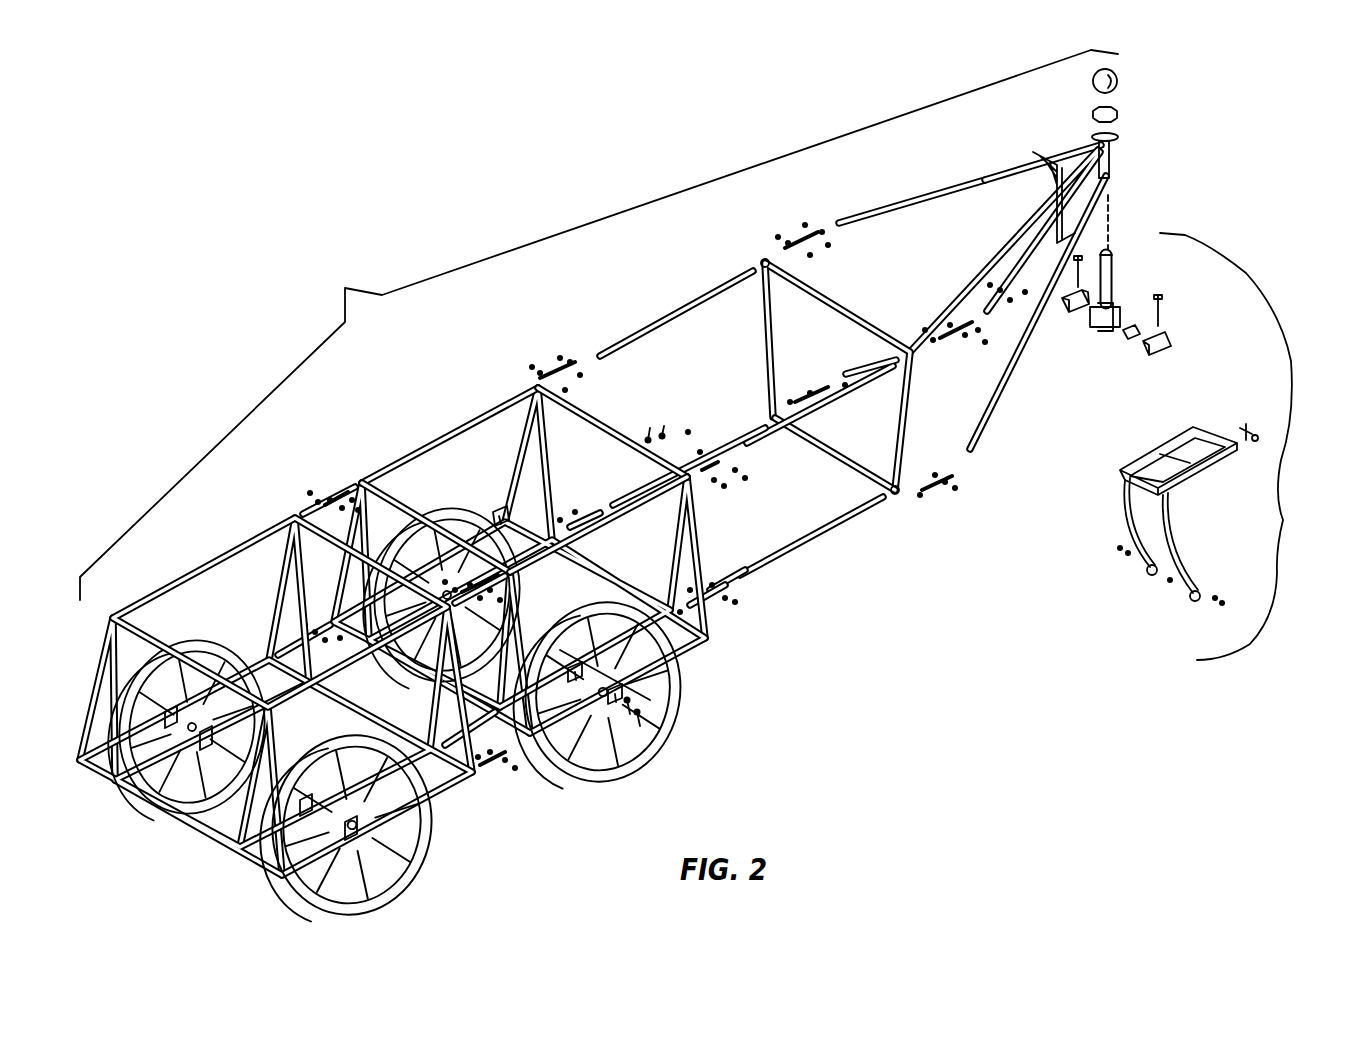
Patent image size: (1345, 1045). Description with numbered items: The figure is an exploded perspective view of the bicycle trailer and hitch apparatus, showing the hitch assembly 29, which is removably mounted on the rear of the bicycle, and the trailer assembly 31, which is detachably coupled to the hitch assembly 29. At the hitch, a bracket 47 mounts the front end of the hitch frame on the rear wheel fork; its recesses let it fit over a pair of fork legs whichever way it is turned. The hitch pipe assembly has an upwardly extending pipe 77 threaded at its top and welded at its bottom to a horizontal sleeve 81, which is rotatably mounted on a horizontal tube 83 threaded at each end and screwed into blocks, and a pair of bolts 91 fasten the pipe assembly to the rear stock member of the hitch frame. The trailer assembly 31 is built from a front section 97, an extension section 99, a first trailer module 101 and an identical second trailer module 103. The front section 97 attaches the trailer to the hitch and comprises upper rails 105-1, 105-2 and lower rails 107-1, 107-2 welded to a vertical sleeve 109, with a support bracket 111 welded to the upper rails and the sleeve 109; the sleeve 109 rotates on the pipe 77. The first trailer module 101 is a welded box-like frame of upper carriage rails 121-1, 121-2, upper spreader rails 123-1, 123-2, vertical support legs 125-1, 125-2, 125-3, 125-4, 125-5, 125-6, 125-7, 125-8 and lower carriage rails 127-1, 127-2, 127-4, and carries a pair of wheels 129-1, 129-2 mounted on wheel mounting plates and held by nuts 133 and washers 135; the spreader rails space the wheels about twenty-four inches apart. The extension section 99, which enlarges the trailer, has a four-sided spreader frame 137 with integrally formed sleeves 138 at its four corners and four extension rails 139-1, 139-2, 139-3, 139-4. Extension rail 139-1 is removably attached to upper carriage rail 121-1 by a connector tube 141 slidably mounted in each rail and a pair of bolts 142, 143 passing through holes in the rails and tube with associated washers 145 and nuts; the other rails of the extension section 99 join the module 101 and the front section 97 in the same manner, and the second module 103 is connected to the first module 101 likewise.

The hitch assembly 29 is at (1219, 446).
The trailer assembly 31 is at (342, 284).
The bracket 47 is at (1245, 425).
The pipe 77 is at (1115, 280).
The horizontal sleeve 81 is at (1095, 322).
The horizontal tube 83 is at (1133, 342).
The bolts 91 is at (1095, 260).
The front section 97 is at (1019, 259).
The extension section 99 is at (814, 397).
The first trailer module 101 is at (562, 590).
The second trailer module 103 is at (179, 572).
The upper rail 105-1 is at (1040, 163).
The upper rail 105-2 is at (955, 175).
The lower rail 107-1 is at (1005, 400).
The lower rail 107-2 is at (1000, 262).
The vertical sleeve 109 is at (1112, 152).
The support bracket 111 is at (1075, 150).
The upper carriage rail 121-1 is at (592, 532).
The upper carriage rail 121-2 is at (530, 398).
The upper spreader rail 123-1 is at (610, 395).
The upper spreader rail 123-2 is at (400, 480).
The vertical support leg 125-1 is at (728, 590).
The vertical support leg 125-2 is at (745, 570).
The vertical support leg 125-3 is at (663, 466).
The vertical support leg 125-4 is at (603, 499).
The vertical support leg 125-5 is at (520, 605).
The vertical support leg 125-6 is at (540, 760).
The vertical support leg 125-7 is at (343, 537).
The vertical support leg 125-8 is at (350, 498).
The lower carriage rail 127-1 is at (705, 640).
The lower carriage rail 127-2 is at (690, 655).
The lower carriage rail 127-4 is at (500, 512).
The wheel 129-1 is at (655, 740).
The wheel 129-2 is at (415, 500).
The nuts 133 is at (640, 760).
The washers 135 is at (650, 705).
The spreader frame 137 is at (822, 298).
The sleeves 138 is at (766, 258).
The extension rail 139-1 is at (841, 453).
The extension rail 139-2 is at (850, 525).
The extension rail 139-3 is at (728, 282).
The extension rail 139-4 is at (750, 435).
The connector tube 141 is at (706, 478).
The bolt 142 is at (728, 485).
The bolt 143 is at (702, 448).
The washers 145 is at (668, 418).